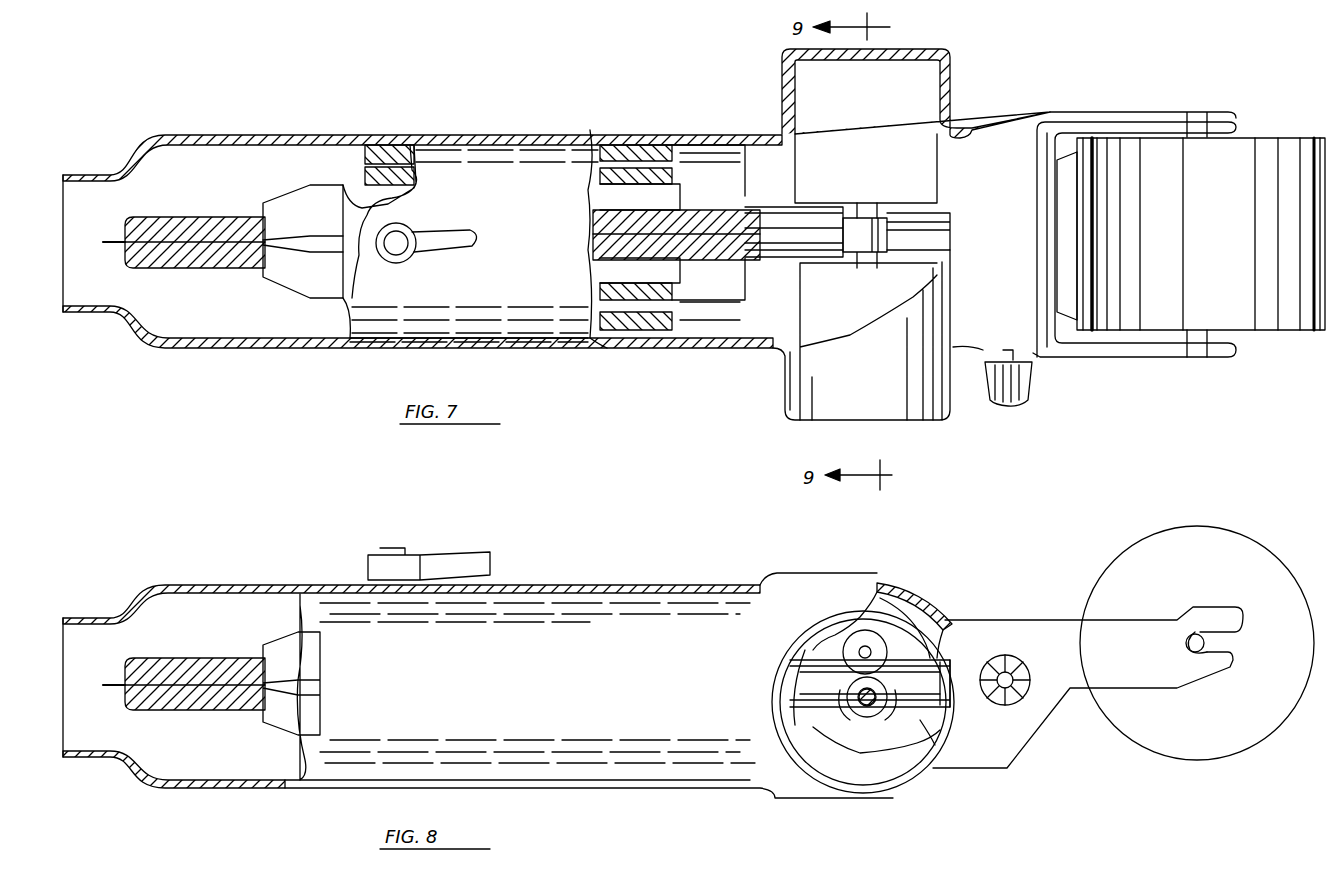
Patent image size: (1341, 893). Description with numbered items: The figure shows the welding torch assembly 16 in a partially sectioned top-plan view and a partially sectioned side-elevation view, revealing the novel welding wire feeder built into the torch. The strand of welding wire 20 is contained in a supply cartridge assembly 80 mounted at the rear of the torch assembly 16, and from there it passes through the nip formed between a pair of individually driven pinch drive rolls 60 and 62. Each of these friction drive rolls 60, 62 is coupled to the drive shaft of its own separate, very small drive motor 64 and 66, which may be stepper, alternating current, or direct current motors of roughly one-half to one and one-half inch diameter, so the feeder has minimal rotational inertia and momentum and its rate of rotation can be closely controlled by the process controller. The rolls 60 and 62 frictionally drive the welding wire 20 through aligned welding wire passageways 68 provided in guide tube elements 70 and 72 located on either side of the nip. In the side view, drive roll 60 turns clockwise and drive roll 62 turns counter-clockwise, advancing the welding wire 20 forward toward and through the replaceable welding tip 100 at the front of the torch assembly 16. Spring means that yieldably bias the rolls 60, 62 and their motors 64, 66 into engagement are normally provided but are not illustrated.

In FIG. 7, the welding torch assembly 16 is at (278, 127).
In FIG. 8, the welding torch assembly 16 is at (243, 583).
In FIG. 7, the welding wire 20 is at (113, 260).
In FIG. 8, the welding wire 20 is at (113, 705).
In FIG. 7, the pinch drive roll 60 is at (863, 242).
In FIG. 8, the pinch drive roll 60 is at (882, 648).
In FIG. 8, the pinch drive roll 62 is at (868, 700).
In FIG. 7, the drive motor 64 is at (877, 142).
In FIG. 8, the drive motor 64 is at (898, 620).
In FIG. 7, the drive motor 66 is at (859, 297).
In FIG. 7, the welding wire passageway 68 is at (616, 250).
In FIG. 7, the guide tube element 70 is at (782, 205).
In FIG. 8, the guide tube element 70 is at (790, 690).
In FIG. 7, the guide tube element 72 is at (938, 240).
In FIG. 8, the guide tube element 72 is at (925, 695).
In FIG. 7, the supply cartridge assembly 80 is at (1238, 293).
In FIG. 8, the supply cartridge assembly 80 is at (1220, 570).
In FIG. 7, the replaceable welding tip 100 is at (178, 217).
In FIG. 8, the replaceable welding tip 100 is at (218, 658).